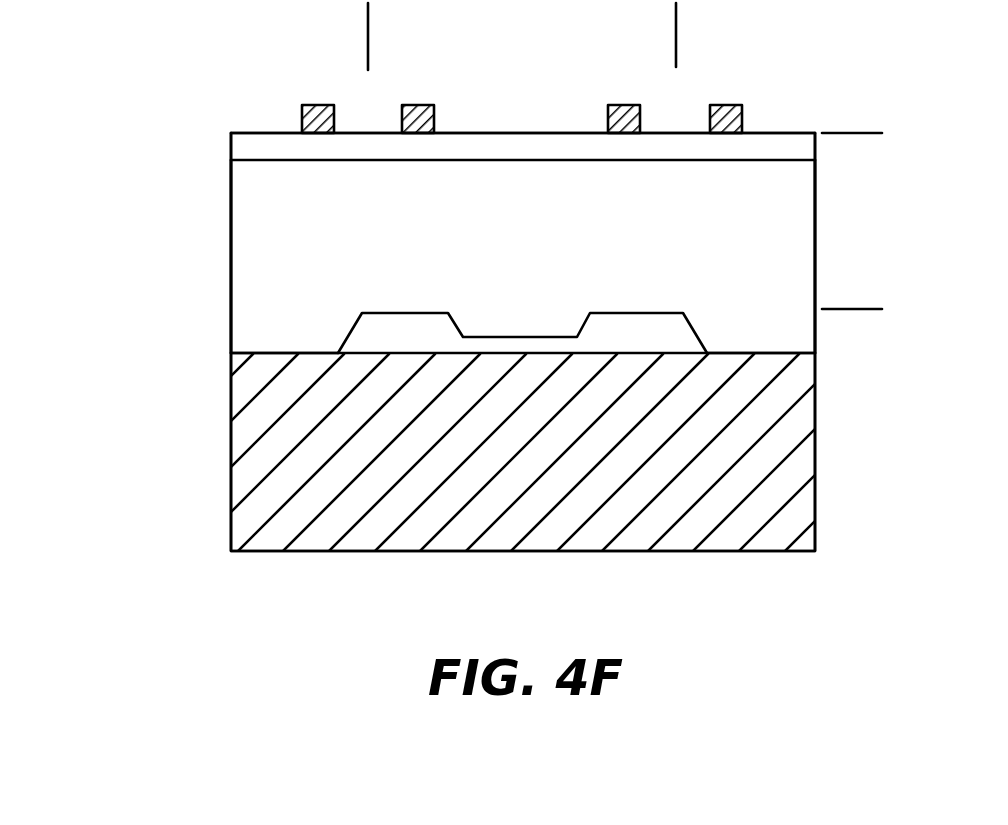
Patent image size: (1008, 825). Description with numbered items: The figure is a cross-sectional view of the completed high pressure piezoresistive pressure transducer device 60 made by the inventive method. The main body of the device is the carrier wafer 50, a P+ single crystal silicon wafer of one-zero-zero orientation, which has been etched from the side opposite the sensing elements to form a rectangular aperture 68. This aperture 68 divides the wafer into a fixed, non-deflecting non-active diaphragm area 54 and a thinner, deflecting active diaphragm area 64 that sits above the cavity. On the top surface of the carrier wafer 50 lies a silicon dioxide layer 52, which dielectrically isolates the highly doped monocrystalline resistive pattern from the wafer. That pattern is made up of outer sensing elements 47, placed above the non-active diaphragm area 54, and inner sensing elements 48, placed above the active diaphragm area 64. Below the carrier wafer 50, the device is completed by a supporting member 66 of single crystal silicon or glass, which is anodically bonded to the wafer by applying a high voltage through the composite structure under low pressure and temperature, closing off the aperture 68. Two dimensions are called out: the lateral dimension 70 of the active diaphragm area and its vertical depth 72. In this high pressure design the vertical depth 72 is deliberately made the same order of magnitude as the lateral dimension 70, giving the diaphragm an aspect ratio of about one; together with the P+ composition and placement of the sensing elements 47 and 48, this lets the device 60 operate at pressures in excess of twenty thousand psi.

The outer sensing elements 47 is at (723, 105).
The inner sensing elements 48 is at (618, 105).
The carrier wafer 50 is at (180, 135).
The silicon dioxide layer 52 is at (265, 145).
The non-active diaphragm area 54 is at (260, 307).
The high pressure piezoresistive pressure transducer device 60 is at (208, 468).
The active diaphragm area 64 is at (345, 218).
The supporting member 66 is at (753, 427).
The aperture 68 is at (610, 325).
The lateral dimension 70 is at (676, 32).
The vertical depth 72 is at (844, 133).